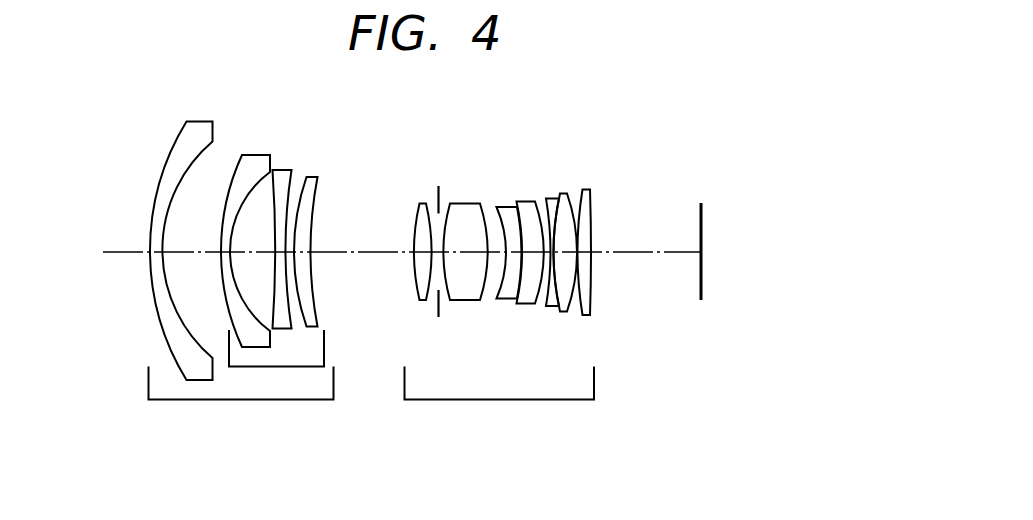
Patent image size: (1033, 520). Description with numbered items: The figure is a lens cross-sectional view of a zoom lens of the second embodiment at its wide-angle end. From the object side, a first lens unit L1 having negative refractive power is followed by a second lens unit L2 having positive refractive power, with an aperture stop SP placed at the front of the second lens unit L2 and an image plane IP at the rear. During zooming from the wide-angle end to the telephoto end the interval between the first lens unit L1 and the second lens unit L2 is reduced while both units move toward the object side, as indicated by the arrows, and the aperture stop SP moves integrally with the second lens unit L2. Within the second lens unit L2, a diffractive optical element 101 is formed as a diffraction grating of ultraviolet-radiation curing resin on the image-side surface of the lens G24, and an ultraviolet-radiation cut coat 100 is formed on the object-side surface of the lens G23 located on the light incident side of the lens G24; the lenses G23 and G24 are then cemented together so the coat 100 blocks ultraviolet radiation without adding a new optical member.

The first lens unit L1 is at (240, 470).
The second lens unit L2 is at (515, 400).
The aperture stop SP is at (438, 190).
The image plane IP is at (703, 210).
The diffractive optical element 101 is at (576, 125).
The lens G23 is at (510, 206).
The lens G24 is at (524, 204).
The ultraviolet-radiation cut coat 100 is at (510, 298).